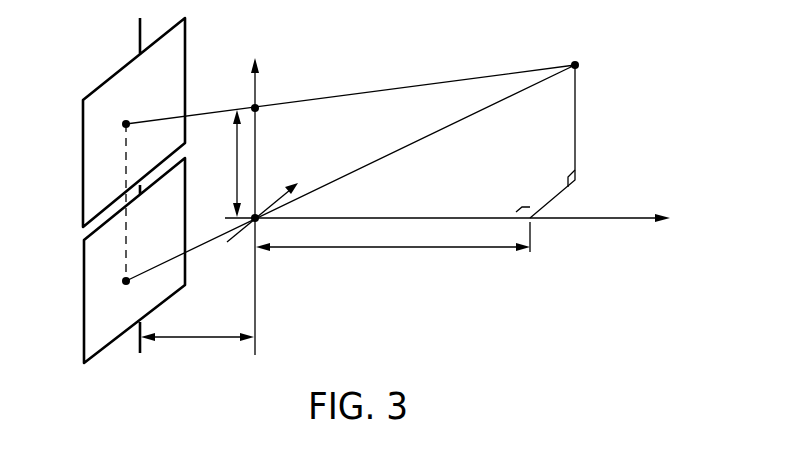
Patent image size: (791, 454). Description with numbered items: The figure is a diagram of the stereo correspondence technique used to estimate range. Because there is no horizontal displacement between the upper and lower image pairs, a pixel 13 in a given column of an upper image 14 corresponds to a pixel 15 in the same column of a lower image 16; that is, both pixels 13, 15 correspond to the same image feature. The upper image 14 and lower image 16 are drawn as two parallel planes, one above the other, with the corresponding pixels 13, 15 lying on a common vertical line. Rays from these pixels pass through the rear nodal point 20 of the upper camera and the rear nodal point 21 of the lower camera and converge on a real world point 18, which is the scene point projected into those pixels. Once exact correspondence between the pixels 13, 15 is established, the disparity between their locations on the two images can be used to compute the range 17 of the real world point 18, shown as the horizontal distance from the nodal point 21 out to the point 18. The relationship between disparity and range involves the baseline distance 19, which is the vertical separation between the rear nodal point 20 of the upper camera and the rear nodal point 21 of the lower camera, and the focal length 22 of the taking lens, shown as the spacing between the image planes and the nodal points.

The pixel 13 is at (126, 123).
The upper image 14 is at (175, 67).
The pixel 15 is at (126, 281).
The lower image 16 is at (97, 330).
The range 17 is at (430, 248).
The real world point 18 is at (578, 63).
The baseline distance 19 is at (237, 158).
The rear nodal point 20 is at (258, 106).
The rear nodal point 21 is at (258, 221).
The focal length 22 is at (205, 338).